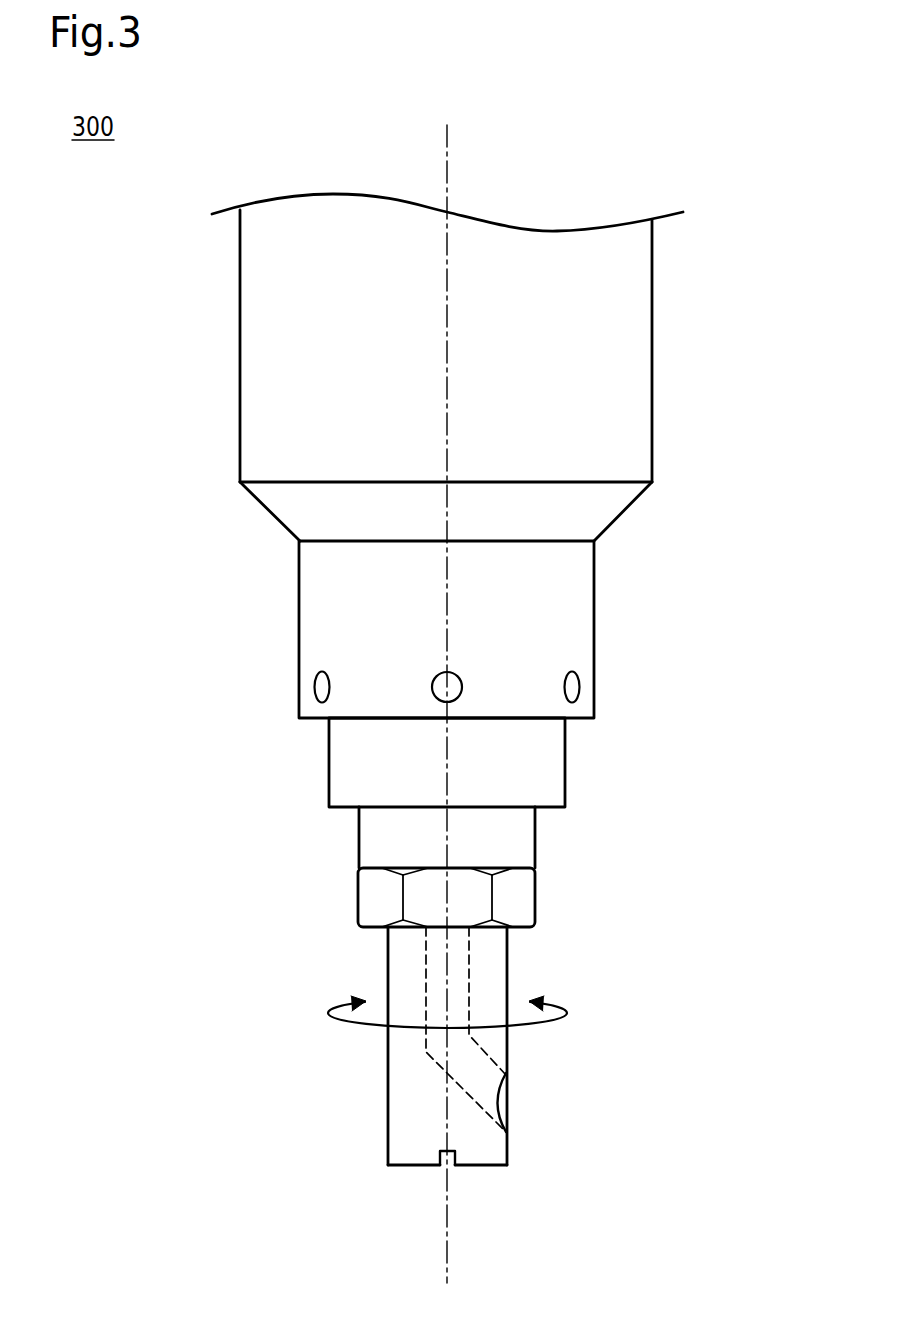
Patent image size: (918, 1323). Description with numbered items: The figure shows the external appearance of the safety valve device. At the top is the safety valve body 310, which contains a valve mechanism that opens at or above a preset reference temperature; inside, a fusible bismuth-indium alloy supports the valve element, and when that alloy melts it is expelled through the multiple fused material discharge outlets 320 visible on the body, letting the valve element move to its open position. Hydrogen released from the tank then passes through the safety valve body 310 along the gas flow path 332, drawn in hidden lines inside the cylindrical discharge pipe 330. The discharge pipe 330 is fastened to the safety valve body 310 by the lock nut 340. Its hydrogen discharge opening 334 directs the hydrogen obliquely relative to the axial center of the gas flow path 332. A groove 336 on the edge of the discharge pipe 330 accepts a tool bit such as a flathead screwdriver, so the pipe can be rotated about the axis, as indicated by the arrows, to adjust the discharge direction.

The safety valve body 310 is at (652, 328).
The fused material discharge outlets 320 is at (579, 687).
The discharge pipe 330 is at (508, 967).
The gas flow path 332 is at (425, 988).
The hydrogen discharge opening 334 is at (508, 1102).
The groove 336 is at (443, 1166).
The lock nut 340 is at (536, 897).